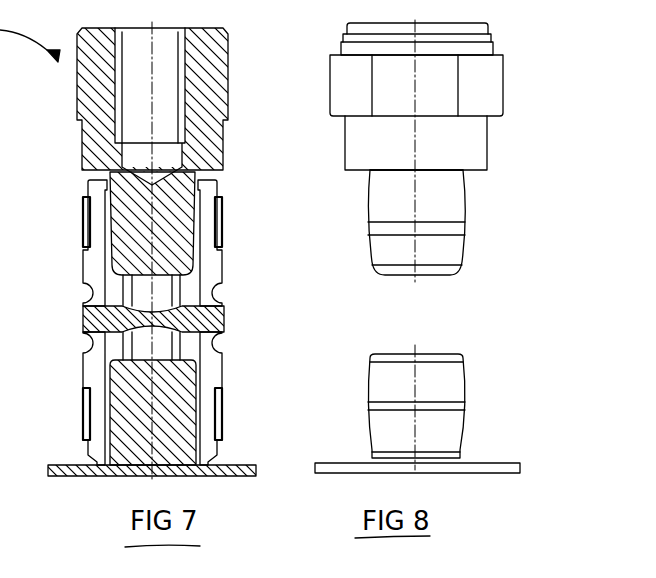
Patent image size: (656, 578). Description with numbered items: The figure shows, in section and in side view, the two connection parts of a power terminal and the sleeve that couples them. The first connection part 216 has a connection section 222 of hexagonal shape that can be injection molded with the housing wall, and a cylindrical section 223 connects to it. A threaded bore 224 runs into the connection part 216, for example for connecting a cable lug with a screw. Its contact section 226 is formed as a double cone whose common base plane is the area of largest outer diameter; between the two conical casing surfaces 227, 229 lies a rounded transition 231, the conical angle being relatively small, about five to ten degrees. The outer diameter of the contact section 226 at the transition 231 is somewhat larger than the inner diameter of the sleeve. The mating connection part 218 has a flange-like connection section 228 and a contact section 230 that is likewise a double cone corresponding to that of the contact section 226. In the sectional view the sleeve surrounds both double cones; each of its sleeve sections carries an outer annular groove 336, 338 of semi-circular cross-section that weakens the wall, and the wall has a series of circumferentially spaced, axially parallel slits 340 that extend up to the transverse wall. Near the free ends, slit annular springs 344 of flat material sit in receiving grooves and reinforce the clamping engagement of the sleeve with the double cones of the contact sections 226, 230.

In FIG. 8, the connection part 216 is at (320, 43).
In FIG. 7, the connection part 218 is at (77, 482).
In FIG. 8, the connection part 218 is at (394, 350).
In FIG. 8, the connection section 222 is at (440, 99).
In FIG. 7, the cylindrical section 223 is at (212, 140).
In FIG. 8, the cylindrical section 223 is at (462, 153).
In FIG. 7, the threaded bore 224 is at (182, 80).
In FIG. 7, the contact section 226 is at (172, 226).
In FIG. 8, the contact section 226 is at (436, 211).
In FIG. 8, the conical casing surface 227 is at (370, 204).
In FIG. 7, the connection section 228 is at (55, 464).
In FIG. 8, the connection section 228 is at (331, 472).
In FIG. 8, the conical casing surface 229 is at (373, 252).
In FIG. 7, the contact section 230 is at (172, 416).
In FIG. 8, the contact section 230 is at (436, 395).
In FIG. 8, the rounded transition 231 is at (370, 230).
In FIG. 7, the outer annular groove 336 is at (218, 296).
In FIG. 7, the outer annular groove 338 is at (222, 336).
In FIG. 7, the axially parallel slits 340 is at (178, 350).
In FIG. 7, the slit annular spring 344 is at (224, 220).